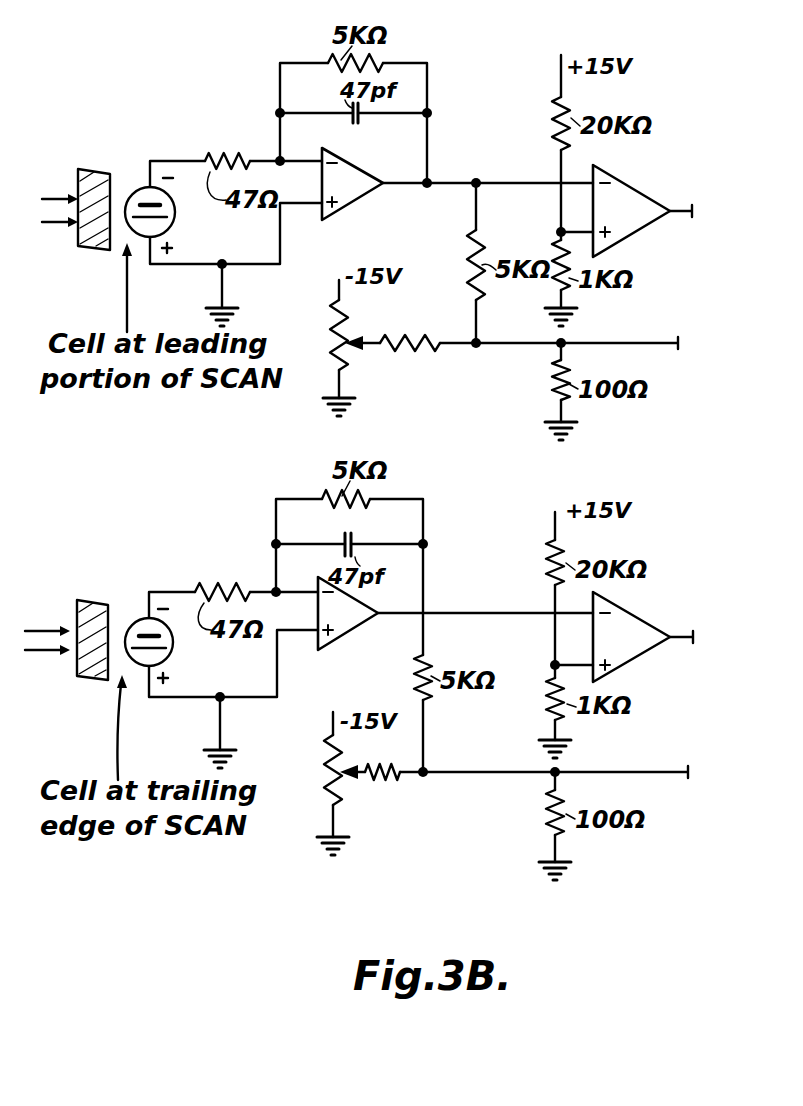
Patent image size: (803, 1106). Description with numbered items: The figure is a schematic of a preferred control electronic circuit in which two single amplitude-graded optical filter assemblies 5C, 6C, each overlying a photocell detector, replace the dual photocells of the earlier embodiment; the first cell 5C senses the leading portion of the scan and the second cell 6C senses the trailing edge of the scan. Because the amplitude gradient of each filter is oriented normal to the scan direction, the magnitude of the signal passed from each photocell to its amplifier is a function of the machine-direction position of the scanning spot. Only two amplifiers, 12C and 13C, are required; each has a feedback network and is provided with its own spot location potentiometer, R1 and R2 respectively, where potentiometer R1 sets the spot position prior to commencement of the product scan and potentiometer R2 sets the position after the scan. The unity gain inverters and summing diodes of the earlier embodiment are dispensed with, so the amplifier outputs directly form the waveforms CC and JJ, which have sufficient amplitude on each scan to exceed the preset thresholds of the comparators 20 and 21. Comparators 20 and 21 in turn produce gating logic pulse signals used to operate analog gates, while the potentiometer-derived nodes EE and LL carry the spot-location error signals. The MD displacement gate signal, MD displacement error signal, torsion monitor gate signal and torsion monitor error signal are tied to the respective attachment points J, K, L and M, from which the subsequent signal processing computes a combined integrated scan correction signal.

The amplitude-graded optical filter assembly 5C is at (113, 184).
The amplitude-graded optical filter assembly 6C is at (109, 618).
The amplifier 12C is at (362, 193).
The amplifier 13C is at (358, 623).
The comparator 20 is at (642, 211).
The comparator 21 is at (643, 637).
The spot location potentiometer R1 is at (353, 339).
The spot location potentiometer R2 is at (345, 776).
The waveform CC is at (516, 178).
The waveform EE is at (524, 334).
The waveform JJ is at (540, 613).
The waveform LL is at (544, 763).
The attachment point J is at (673, 173).
The attachment point K is at (672, 313).
The attachment point L is at (670, 595).
The attachment point M is at (668, 750).